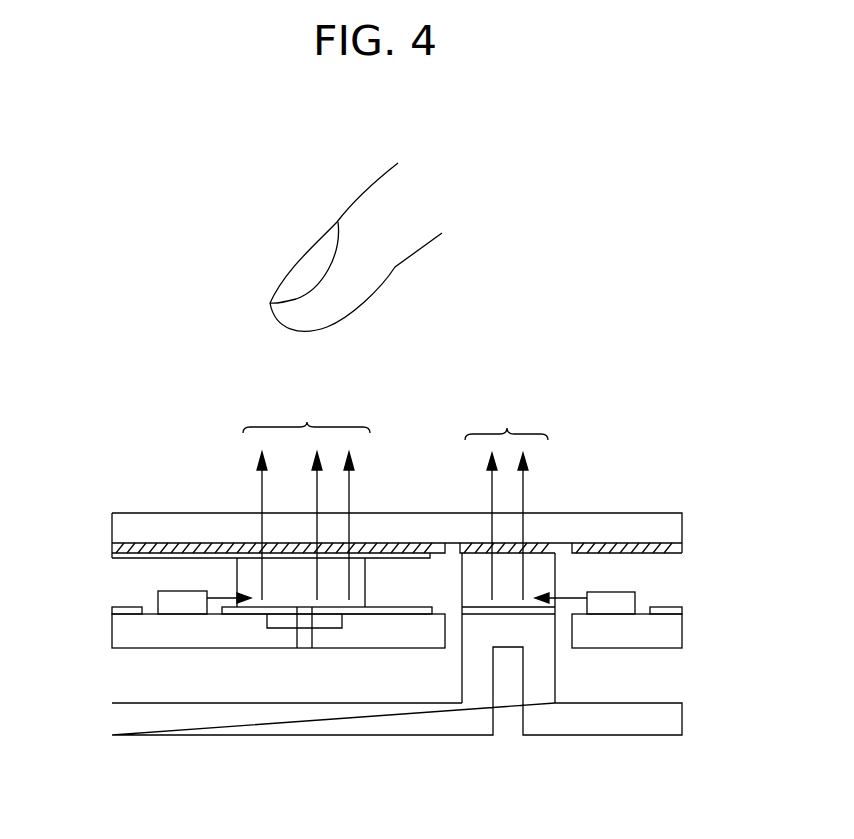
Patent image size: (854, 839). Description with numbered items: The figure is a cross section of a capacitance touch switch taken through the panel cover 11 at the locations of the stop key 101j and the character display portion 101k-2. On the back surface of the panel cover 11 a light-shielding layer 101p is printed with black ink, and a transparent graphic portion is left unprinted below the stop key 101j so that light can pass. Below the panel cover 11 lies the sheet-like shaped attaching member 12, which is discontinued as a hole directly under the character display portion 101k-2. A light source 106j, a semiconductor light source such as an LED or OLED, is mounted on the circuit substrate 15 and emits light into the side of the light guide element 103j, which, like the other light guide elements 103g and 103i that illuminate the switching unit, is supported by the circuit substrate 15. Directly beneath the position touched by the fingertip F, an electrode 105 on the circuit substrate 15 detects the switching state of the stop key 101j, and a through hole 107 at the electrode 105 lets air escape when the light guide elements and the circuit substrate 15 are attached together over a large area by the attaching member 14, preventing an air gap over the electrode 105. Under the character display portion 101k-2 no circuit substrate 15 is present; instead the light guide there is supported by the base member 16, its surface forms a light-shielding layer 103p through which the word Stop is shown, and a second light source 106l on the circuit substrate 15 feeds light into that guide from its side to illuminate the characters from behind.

The fingertip F is at (345, 302).
The panel cover 11 is at (668, 528).
The sheet-like shaped attaching member 12 is at (122, 562).
The attaching member 14 is at (118, 612).
The circuit substrate 15 is at (377, 647).
The base member 16 is at (125, 725).
The stop key 101j is at (306, 495).
The character display portion 101k-2 is at (512, 497).
The light-shielding layer 101p is at (390, 545).
The light guide element 103j is at (245, 577).
The light-shielding layer 103p is at (542, 545).
The light guide element 103i is at (543, 578).
The light guide element 103g is at (476, 615).
The electrode 105 is at (275, 625).
The light source 106j is at (167, 598).
The light source 106l is at (625, 603).
The through hole 107 is at (303, 640).